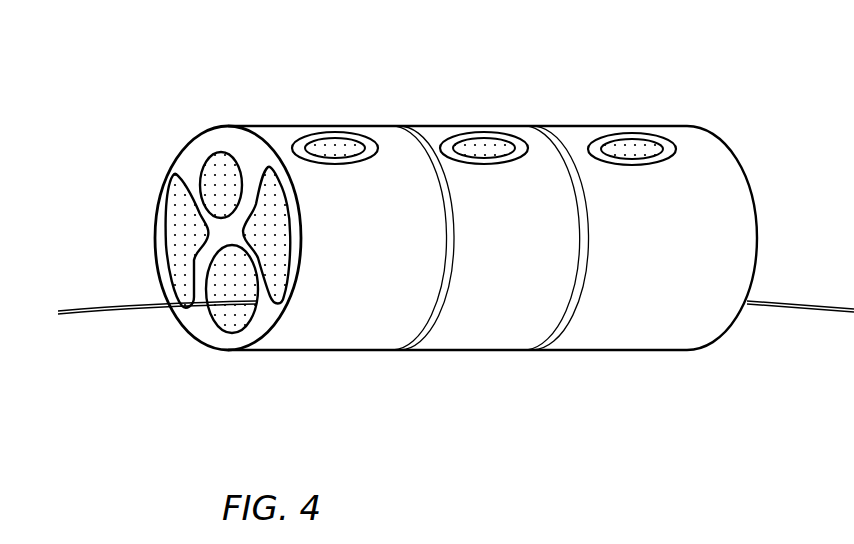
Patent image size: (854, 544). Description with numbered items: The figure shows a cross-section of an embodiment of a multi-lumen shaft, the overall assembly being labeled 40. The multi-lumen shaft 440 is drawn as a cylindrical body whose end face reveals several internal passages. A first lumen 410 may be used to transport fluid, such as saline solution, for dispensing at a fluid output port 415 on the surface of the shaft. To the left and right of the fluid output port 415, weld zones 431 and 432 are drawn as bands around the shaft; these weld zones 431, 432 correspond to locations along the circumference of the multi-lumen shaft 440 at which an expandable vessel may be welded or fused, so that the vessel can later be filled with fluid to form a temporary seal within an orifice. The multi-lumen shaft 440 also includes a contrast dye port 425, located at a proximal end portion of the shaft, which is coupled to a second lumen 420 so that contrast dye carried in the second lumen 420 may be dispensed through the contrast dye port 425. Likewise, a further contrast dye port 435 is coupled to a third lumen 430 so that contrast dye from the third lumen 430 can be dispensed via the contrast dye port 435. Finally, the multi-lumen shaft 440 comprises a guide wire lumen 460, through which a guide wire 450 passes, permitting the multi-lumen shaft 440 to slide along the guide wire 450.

The sensor assembly 40 is at (104, 48).
The first lumen 410 is at (160, 168).
The fluid output port 415 is at (493, 118).
The second lumen 420 is at (142, 241).
The contrast dye port 425 is at (345, 116).
The third lumen 430 is at (316, 235).
The weld zone 431 is at (426, 267).
The weld zone 432 is at (560, 267).
The contrast dye port 435 is at (640, 117).
The multi-lumen shaft 440 is at (480, 238).
The guide wire 450 is at (447, 344).
The guide wire lumen 460 is at (198, 306).